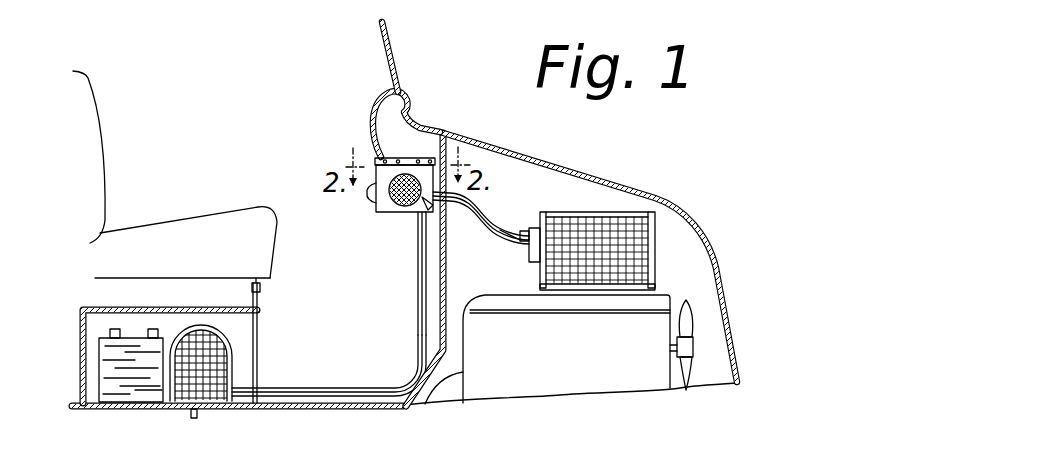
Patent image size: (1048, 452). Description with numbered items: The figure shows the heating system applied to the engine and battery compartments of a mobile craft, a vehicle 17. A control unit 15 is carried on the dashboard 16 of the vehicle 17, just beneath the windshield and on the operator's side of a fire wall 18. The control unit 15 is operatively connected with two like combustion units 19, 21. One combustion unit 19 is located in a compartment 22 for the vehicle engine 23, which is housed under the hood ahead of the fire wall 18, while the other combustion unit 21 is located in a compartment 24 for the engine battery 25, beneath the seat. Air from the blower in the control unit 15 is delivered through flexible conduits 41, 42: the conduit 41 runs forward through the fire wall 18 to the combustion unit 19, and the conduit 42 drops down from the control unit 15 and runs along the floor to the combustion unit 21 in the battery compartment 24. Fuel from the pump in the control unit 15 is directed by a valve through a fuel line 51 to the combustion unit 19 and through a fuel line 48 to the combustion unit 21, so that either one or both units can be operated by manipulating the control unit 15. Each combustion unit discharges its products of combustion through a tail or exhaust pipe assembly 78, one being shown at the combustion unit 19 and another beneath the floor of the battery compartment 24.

The control unit 15 is at (393, 213).
The dashboard 16 is at (373, 124).
The vehicle 17 is at (403, 64).
The fire wall 18 is at (447, 279).
The combustion unit 19 is at (598, 204).
The combustion unit 21 is at (230, 345).
The compartment 22 is at (676, 240).
The vehicle engine 23 is at (585, 377).
The compartment 24 is at (94, 398).
The engine battery 25 is at (120, 345).
The flexible conduit 41 is at (485, 212).
The flexible conduit 42 is at (417, 283).
The fuel line 48 is at (412, 357).
The fuel line 51 is at (524, 219).
The exhaust pipe assembly 78 is at (197, 411).